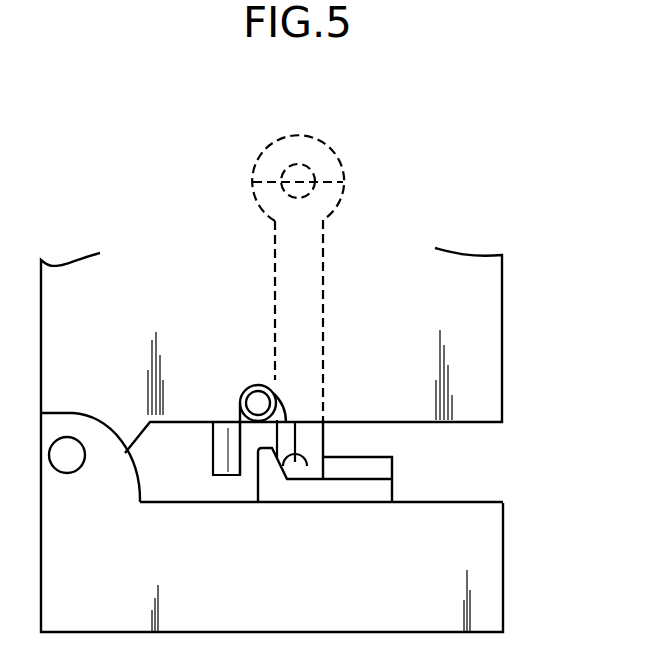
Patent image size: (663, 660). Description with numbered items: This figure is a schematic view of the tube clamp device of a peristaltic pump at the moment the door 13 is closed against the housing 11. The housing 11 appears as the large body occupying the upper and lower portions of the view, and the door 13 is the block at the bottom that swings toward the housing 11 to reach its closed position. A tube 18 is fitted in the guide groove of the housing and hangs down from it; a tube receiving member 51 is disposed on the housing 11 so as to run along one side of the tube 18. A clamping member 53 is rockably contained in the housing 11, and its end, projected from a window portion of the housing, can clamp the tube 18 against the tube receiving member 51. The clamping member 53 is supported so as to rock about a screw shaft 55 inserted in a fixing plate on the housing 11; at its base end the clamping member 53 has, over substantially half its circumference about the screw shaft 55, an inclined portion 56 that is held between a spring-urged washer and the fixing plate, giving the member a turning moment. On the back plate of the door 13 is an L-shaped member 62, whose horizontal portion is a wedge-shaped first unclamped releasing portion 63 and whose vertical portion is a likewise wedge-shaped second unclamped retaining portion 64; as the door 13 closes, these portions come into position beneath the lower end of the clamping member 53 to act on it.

The housing 11 is at (502, 357).
The door 13 is at (497, 583).
The tube 18 is at (248, 392).
The tube receiving member 51 is at (213, 452).
The clamping member 53 is at (323, 443).
The screw shaft 55 is at (318, 198).
The inclined portion 56 is at (333, 153).
The L-shaped member 62 is at (348, 493).
The first unclamped releasing portion 63 is at (392, 466).
The second unclamped retaining portion 64 is at (307, 485).